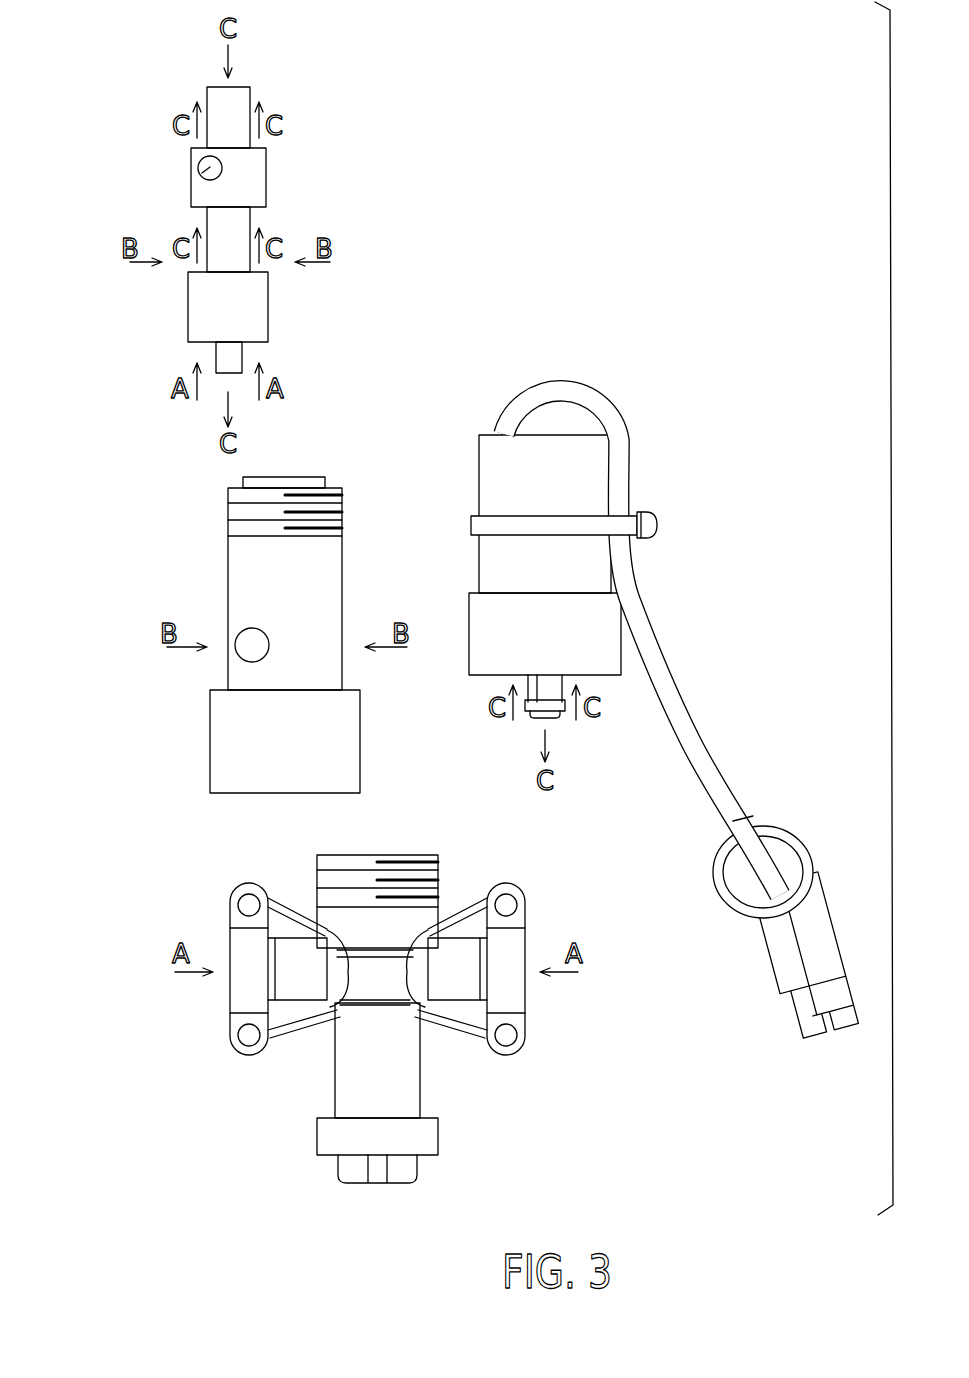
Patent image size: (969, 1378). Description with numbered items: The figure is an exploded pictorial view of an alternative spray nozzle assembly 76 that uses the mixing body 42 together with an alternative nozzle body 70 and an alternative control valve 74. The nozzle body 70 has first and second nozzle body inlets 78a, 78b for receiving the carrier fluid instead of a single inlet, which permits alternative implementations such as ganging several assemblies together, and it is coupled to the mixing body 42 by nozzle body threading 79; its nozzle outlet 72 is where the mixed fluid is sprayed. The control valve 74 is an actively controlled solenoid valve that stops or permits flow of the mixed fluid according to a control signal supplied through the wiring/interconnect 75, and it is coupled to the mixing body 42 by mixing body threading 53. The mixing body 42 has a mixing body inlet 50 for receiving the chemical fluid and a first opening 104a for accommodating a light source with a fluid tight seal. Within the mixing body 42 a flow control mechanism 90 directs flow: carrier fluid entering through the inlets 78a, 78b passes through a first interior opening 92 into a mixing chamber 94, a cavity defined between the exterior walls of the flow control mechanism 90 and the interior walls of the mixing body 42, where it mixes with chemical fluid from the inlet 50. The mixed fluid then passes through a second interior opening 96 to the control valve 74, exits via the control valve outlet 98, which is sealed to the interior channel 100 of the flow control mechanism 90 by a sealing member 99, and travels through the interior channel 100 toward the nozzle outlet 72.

The mixing body 42 is at (240, 762).
The mixing body inlet 50 is at (252, 643).
The mixing body threading 53 is at (323, 510).
The nozzle body 70 is at (365, 1060).
The nozzle outlet 72 is at (357, 1173).
The control valve 74 is at (583, 480).
The wiring/interconnect 75 is at (687, 735).
The spray nozzle assembly 76 is at (90, 530).
The first nozzle body inlet 78a is at (228, 987).
The second nozzle body inlet 78b is at (528, 987).
The nozzle body threading 79 is at (407, 880).
The flow control mechanism 90 is at (250, 175).
The first interior opening 92 is at (205, 346).
The mixing chamber 94 is at (198, 258).
The second interior opening 96 is at (203, 208).
The control valve outlet 98 is at (538, 720).
The sealing member 99 is at (553, 720).
The interior channel 100 is at (235, 100).
The first opening 104a is at (206, 168).